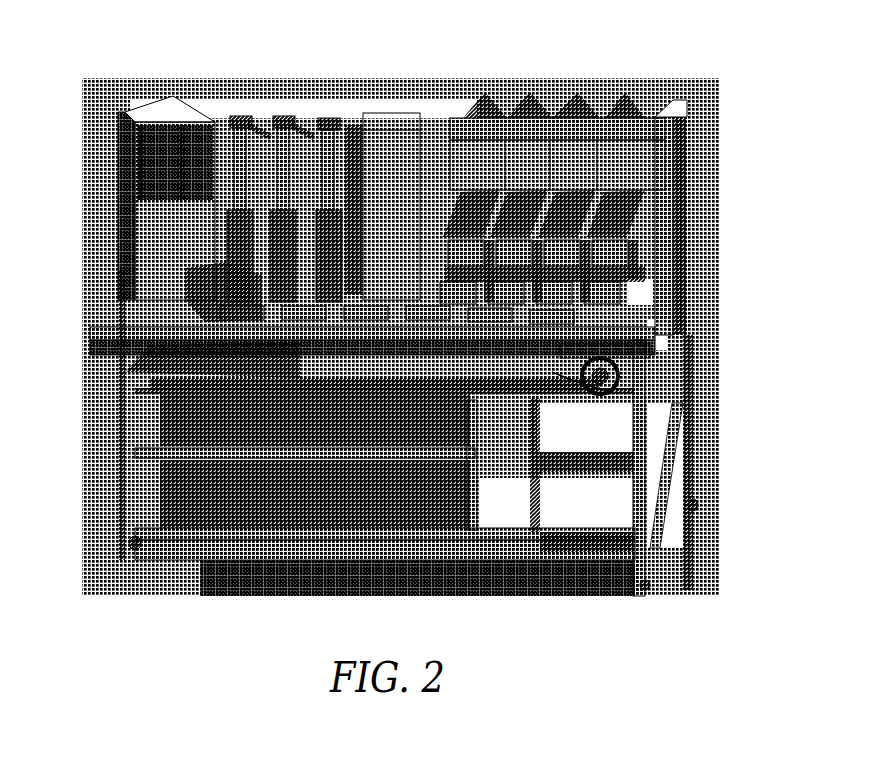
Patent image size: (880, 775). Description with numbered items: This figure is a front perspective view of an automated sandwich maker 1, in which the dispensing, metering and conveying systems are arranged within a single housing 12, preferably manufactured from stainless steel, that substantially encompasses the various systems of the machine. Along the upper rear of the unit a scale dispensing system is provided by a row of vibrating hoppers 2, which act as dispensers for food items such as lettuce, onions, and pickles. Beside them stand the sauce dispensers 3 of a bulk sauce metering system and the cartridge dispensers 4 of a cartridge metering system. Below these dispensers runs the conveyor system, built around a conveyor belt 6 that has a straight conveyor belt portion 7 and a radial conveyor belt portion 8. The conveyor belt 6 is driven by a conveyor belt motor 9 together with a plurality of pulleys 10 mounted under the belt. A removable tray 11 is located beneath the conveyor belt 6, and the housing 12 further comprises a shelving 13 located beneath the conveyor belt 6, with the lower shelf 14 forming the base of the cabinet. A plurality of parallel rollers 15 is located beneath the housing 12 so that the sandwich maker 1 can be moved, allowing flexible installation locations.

The automated sandwich maker 1 is at (724, 60).
The vibrating hoppers 2 is at (638, 102).
The sauce dispensers 3 is at (417, 163).
The cartridge dispensers 4 is at (327, 122).
The conveyor belt 6 is at (197, 300).
The straight conveyor belt portion 7 is at (610, 336).
The radial conveyor belt portion 8 is at (203, 283).
The conveyor belt motor 9 is at (556, 392).
The pulleys 10 is at (613, 392).
The removable tray 11 is at (142, 368).
The housing 12 is at (182, 92).
The shelving 13 is at (155, 525).
The bottom shelf 14 is at (362, 538).
The parallel rollers 15 is at (135, 548).